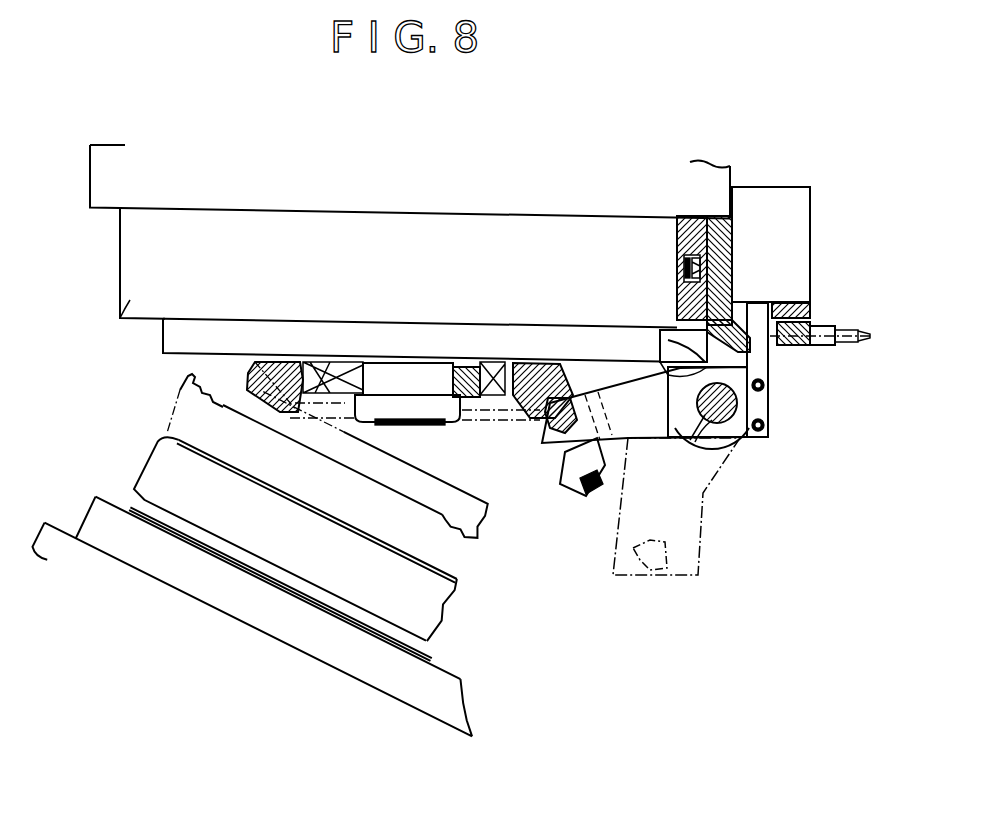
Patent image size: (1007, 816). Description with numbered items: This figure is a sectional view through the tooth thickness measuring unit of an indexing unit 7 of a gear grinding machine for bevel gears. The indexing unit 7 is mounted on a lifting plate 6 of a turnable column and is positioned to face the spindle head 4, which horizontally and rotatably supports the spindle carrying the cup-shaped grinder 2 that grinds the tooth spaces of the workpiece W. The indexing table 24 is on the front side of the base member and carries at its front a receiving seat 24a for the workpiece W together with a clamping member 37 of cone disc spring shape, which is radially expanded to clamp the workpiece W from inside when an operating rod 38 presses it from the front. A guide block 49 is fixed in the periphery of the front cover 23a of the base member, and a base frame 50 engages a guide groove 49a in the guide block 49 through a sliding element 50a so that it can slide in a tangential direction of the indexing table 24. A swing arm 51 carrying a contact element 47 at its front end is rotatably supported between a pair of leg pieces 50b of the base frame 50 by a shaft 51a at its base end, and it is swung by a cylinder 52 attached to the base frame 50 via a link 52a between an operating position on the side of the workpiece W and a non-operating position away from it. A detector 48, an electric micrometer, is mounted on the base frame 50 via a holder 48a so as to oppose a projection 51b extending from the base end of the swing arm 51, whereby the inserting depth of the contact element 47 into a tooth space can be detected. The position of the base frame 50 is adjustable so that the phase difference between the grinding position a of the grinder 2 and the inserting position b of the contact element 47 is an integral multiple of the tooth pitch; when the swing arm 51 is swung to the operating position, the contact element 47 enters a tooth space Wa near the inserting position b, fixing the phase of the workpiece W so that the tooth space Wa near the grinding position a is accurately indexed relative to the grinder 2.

The cup-shaped grinder 2 is at (185, 382).
The spindle head 4 is at (63, 535).
The lifting plate 6 is at (103, 164).
The indexing unit 7 is at (117, 246).
The front cover 23a is at (119, 320).
The indexing table 24 is at (162, 336).
The receiving seat 24a is at (540, 362).
The clamping member 37 is at (470, 400).
The operating rod 38 is at (406, 405).
The contact element 47 is at (572, 404).
The detector 48 is at (727, 327).
The holder 48a is at (805, 328).
The guide block 49 is at (677, 227).
The guide groove 49a is at (684, 265).
The base frame 50 is at (727, 238).
The sliding element 50a is at (690, 276).
The leg piece 50b is at (690, 333).
The swing arm 51 is at (603, 448).
The shaft 51a is at (715, 440).
The projection 51b is at (660, 346).
The cylinder 52 is at (773, 200).
The link 52a is at (768, 405).
The workpiece W is at (293, 362).
The tooth space Wa is at (533, 403).
The grinding position a is at (238, 372).
The inserting position b is at (535, 423).